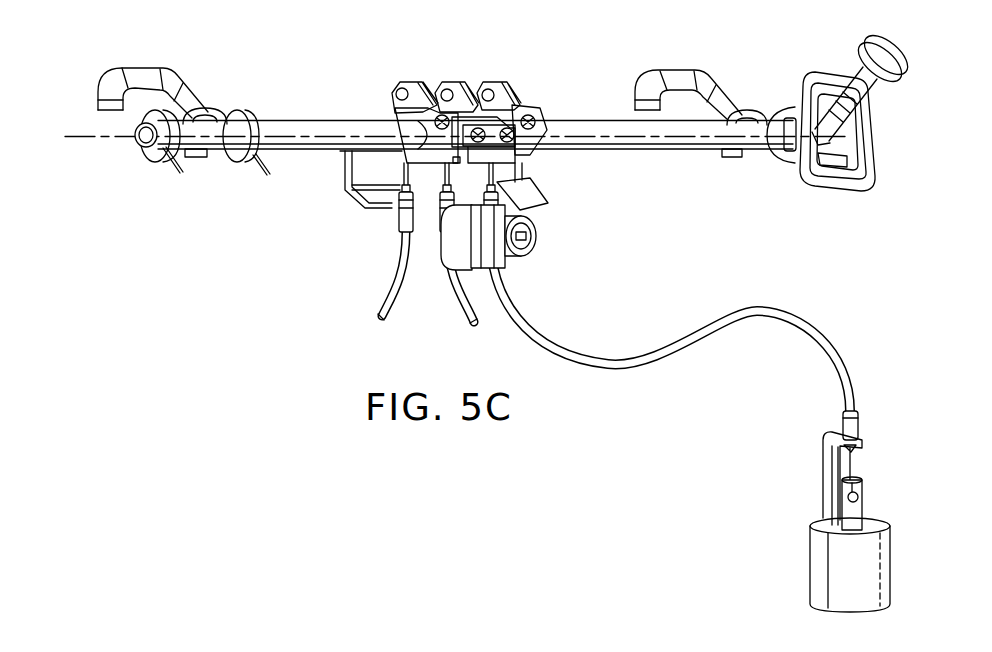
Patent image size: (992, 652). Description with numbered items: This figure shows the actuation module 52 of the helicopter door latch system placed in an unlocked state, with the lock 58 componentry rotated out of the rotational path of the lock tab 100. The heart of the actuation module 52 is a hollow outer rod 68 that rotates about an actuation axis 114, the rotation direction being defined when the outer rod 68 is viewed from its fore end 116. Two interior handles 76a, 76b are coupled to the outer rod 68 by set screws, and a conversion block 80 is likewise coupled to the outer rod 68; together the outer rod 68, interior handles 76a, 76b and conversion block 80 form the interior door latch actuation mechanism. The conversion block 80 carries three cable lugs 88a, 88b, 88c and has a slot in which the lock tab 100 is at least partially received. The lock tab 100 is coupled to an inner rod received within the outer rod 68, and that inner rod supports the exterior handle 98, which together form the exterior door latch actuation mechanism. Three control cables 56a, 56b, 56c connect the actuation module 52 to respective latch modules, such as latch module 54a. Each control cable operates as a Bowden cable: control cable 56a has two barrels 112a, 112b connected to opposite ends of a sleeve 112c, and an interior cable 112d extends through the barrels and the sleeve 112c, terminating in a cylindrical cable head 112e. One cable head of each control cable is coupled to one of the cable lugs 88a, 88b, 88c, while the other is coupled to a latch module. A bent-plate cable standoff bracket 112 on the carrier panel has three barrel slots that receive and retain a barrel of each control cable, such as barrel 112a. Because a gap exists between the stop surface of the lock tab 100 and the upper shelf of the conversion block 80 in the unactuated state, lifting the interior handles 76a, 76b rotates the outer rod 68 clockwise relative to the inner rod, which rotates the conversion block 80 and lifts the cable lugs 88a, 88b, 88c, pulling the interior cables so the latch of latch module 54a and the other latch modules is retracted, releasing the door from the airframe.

The actuation module 52 is at (586, 86).
The latch module 54a is at (892, 566).
The control cable 56a is at (708, 321).
The control cable 56b is at (398, 277).
The control cable 56c is at (459, 318).
The lock 58 is at (540, 236).
The outer rod 68 is at (312, 119).
The interior handle 76a is at (118, 68).
The interior handle 76b is at (703, 70).
The conversion block 80 is at (500, 119).
The cable lug 88a is at (497, 82).
The cable lug 88b is at (402, 82).
The cable lug 88c is at (446, 82).
The exterior handle 98 is at (895, 52).
The lock tab 100 is at (538, 157).
The cable standoff bracket 112 is at (448, 191).
The barrel 112a is at (530, 190).
The barrel 112b is at (862, 424).
The sleeve 112c is at (806, 321).
The interior cable 112d is at (855, 462).
The cylindrical cable head 112e is at (858, 498).
The actuation axis 114 is at (78, 141).
The fore end 116 is at (141, 148).